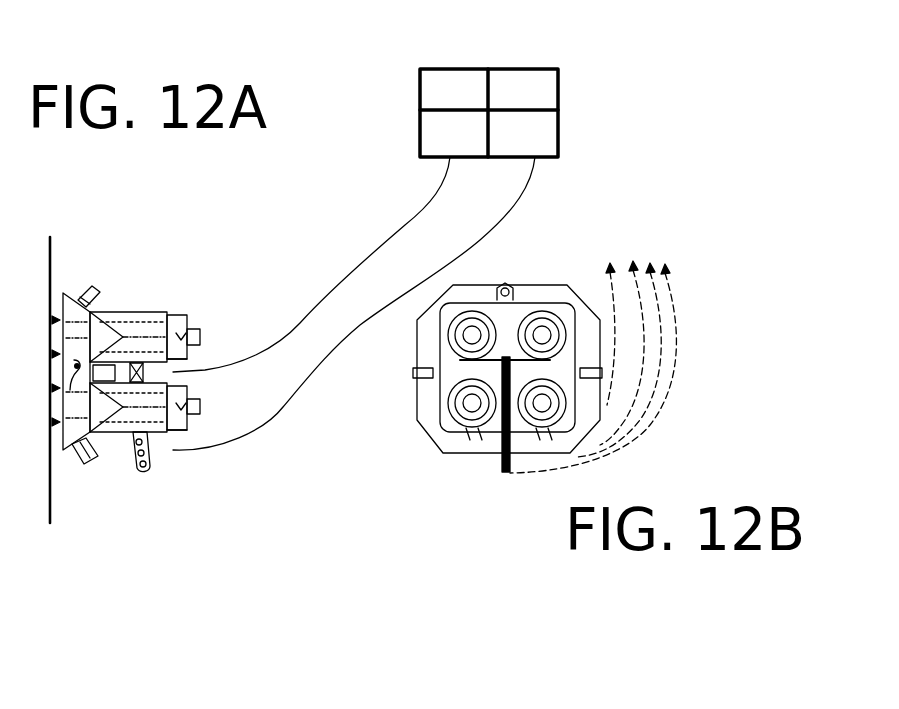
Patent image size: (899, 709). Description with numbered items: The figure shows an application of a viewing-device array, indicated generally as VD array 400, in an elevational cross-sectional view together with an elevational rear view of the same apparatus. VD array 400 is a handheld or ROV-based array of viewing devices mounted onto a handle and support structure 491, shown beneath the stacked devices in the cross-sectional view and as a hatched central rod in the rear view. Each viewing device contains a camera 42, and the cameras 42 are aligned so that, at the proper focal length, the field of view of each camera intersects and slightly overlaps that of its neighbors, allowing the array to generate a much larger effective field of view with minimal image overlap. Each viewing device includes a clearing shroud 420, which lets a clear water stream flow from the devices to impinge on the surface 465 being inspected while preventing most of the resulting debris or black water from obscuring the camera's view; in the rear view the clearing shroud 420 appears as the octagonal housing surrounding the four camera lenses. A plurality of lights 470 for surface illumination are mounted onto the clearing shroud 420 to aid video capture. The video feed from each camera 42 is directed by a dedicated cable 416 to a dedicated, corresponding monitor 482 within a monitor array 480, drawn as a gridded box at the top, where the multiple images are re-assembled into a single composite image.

In FIG. 12A, the surface 465 is at (52, 254).
In FIG. 12A, the lights 470 is at (97, 300).
In FIG. 12B, the lights 470 is at (503, 287).
In FIG. 12A, the camera 42 is at (140, 335).
In FIG. 12A, the cable 416 is at (346, 295).
In FIG. 12B, the cable 416 is at (677, 338).
In FIG. 12A, the clearing shroud 420 is at (65, 452).
In FIG. 12B, the clearing shroud 420 is at (427, 424).
In FIG. 12A, the handle and support structure 491 is at (150, 455).
In FIG. 12B, the handle and support structure 491 is at (500, 438).
In FIG. 12A, the monitor array 480 is at (573, 108).
In FIG. 12A, the monitor 482 is at (443, 130).
In FIG. 12A, the VD array application 400 is at (180, 574).